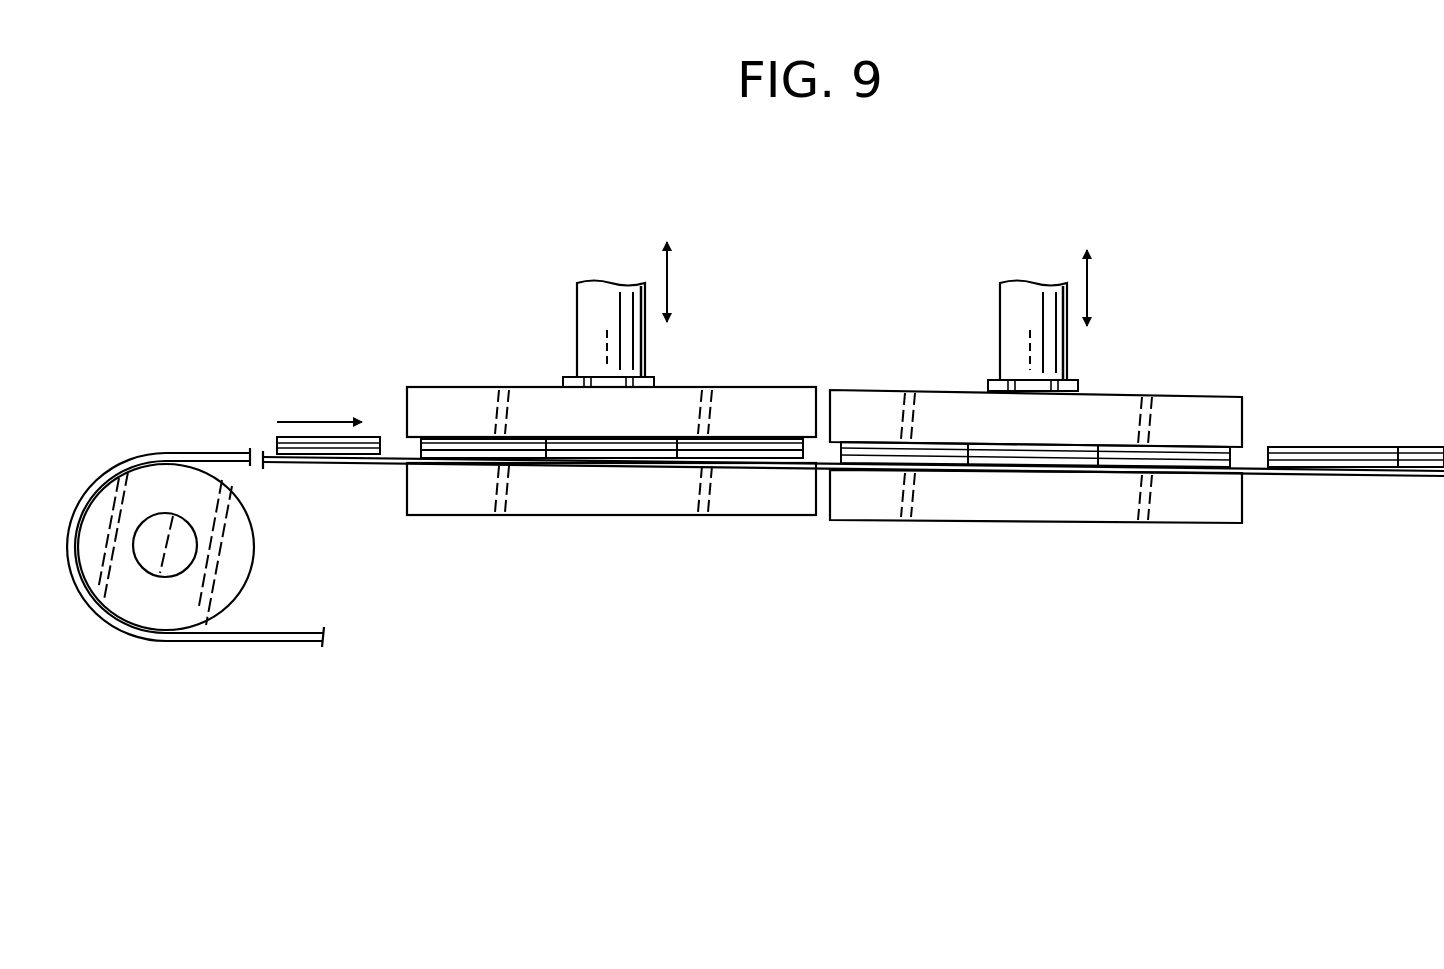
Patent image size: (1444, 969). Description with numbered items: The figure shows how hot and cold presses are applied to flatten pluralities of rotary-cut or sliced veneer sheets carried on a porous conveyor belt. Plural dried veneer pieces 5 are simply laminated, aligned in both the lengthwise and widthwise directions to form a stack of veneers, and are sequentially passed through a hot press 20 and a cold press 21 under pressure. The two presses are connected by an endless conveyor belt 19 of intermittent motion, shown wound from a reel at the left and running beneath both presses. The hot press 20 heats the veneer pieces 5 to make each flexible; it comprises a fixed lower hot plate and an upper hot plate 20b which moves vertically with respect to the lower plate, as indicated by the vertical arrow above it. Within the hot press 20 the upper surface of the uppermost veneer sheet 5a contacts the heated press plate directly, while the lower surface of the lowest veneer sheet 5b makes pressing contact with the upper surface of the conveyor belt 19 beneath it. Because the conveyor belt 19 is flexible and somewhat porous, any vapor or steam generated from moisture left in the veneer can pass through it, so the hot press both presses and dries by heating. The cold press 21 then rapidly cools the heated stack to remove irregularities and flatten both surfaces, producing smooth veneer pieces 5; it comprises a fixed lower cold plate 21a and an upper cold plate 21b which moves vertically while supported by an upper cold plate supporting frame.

The endless conveyor belt 19 is at (220, 455).
The veneer pieces 5 is at (367, 437).
The uppermost veneer sheet 5a is at (458, 443).
The lowest veneer sheet 5b is at (763, 455).
The hot press 20 is at (611, 373).
The upper hot plate 20b is at (744, 410).
The cold press 21 is at (1091, 326).
The lower cold plate 21a is at (652, 497).
The upper cold plate 21b is at (887, 408).